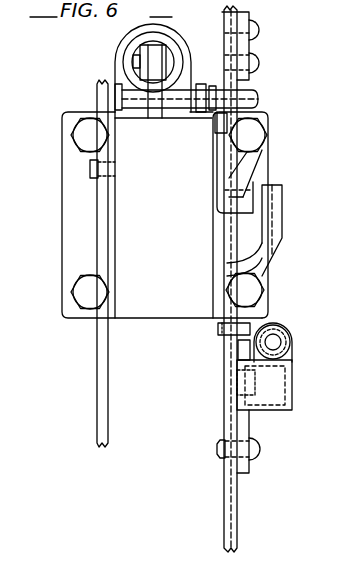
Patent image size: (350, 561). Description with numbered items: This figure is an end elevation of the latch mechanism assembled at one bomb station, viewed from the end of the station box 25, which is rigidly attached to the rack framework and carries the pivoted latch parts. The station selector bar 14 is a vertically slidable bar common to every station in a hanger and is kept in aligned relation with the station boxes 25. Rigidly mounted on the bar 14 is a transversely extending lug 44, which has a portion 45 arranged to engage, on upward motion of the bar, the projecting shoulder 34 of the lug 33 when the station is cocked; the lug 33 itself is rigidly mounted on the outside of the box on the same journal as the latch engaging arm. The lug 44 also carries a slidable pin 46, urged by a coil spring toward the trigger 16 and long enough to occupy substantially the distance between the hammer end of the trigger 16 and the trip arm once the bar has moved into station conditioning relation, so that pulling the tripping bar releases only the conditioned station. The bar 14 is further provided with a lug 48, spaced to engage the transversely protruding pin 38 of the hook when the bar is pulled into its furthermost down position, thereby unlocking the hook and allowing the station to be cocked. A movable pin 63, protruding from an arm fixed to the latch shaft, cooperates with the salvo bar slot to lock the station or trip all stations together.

The station selector bar 14 is at (233, 506).
The trigger 16 is at (283, 219).
The station box 25 is at (71, 268).
The lug 33 is at (258, 160).
The projecting shoulder 34 is at (250, 195).
The transversely protruding pin 38 is at (255, 100).
The transversely extending lug 44 is at (289, 402).
The portion of lug 45 is at (243, 352).
The slidable pin 46 is at (285, 344).
The lug 48 is at (254, 54).
The movable pin 63 is at (90, 168).